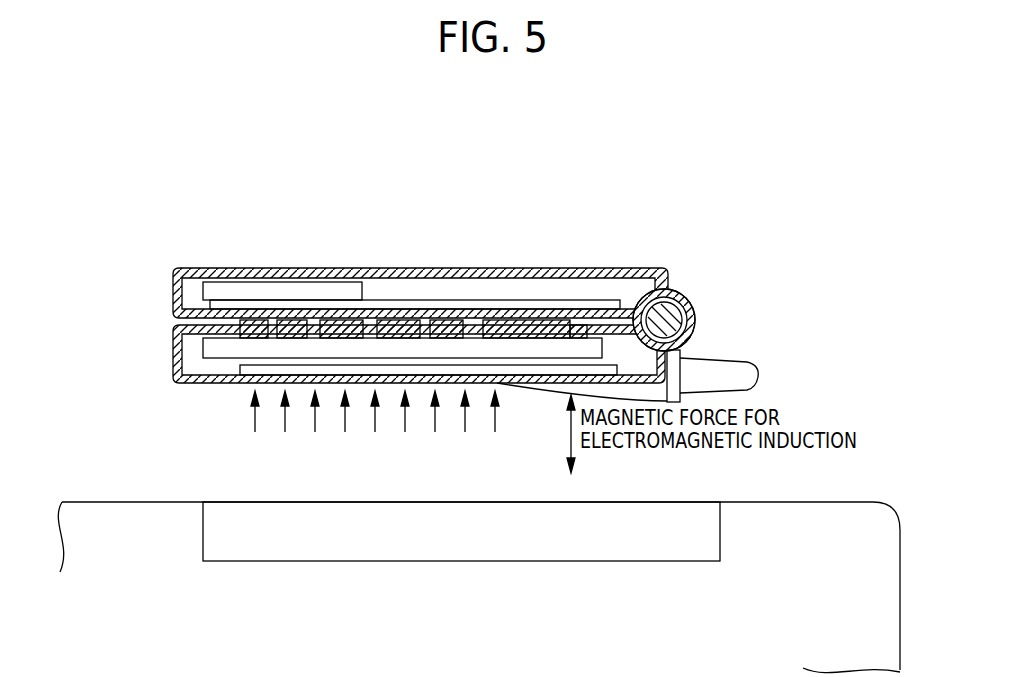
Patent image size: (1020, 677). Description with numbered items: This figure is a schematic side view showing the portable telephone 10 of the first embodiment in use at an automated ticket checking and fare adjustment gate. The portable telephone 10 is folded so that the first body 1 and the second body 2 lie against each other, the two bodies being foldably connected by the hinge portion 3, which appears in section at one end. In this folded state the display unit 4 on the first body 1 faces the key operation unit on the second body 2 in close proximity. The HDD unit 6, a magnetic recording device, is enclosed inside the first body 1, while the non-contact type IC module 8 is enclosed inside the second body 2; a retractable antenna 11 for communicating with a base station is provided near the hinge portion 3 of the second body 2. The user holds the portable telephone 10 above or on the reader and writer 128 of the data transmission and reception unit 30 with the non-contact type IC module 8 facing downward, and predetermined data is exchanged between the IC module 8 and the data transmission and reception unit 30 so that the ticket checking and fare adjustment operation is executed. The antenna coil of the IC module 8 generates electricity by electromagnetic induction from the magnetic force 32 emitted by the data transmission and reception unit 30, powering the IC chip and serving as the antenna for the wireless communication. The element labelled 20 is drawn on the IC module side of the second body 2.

The first body 1 is at (253, 268).
The second body 2 is at (173, 342).
The hinge portion 3 is at (682, 320).
The display unit 4 is at (519, 330).
The HDD unit 6 is at (223, 292).
The non-contact type IC module 8 is at (267, 372).
The portable telephone 10 is at (616, 244).
The retractable antenna 11 is at (747, 377).
The non-contact IC card unit 20 is at (278, 318).
The data transmission and reception unit 30 is at (873, 543).
The magnetic force 32 is at (254, 428).
The reader and writer 128 is at (693, 528).